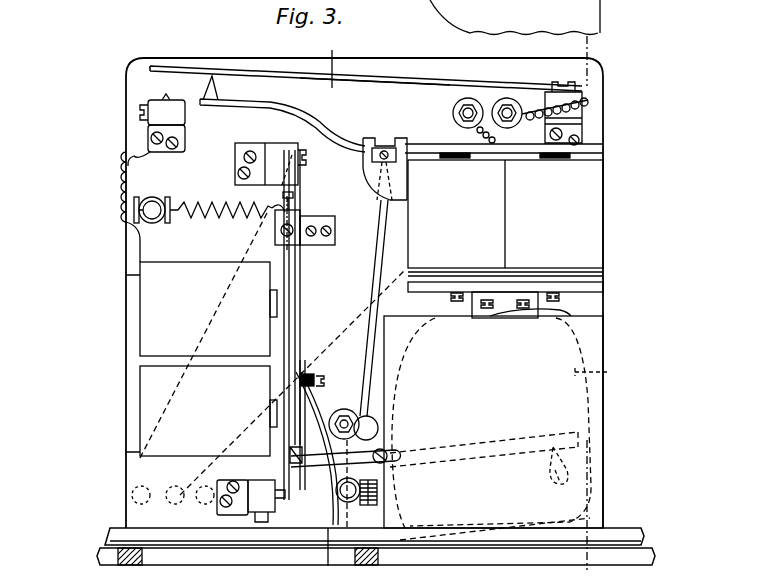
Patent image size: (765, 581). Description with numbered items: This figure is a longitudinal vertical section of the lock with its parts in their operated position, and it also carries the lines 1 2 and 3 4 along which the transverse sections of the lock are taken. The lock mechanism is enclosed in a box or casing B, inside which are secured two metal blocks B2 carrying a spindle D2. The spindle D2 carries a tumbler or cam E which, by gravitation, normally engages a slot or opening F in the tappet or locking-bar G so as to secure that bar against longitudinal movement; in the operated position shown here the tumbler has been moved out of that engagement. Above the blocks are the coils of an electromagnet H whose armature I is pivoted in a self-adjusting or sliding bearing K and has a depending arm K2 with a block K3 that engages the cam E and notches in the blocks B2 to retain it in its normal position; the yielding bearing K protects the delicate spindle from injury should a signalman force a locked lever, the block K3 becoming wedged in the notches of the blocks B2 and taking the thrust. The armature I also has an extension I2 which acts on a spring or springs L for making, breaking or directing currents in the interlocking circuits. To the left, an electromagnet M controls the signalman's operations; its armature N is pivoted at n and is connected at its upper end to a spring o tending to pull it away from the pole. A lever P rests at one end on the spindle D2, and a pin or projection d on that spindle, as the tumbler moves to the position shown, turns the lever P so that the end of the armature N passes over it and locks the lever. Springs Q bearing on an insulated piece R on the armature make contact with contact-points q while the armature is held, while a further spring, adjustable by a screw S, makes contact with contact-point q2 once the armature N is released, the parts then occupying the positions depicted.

The tumbler or cam E is at (525, 190).
The box or casing B is at (233, 58).
The section line 3 is at (322, 61).
The spring or springs L is at (400, 83).
The section line 1 is at (580, 59).
The extension of armature I2 is at (328, 128).
The self-adjusting or sliding bearing K is at (384, 146).
The armature I is at (440, 147).
The coils of electromagnet H is at (505, 239).
The pivot of armature n is at (304, 216).
The spring o is at (226, 212).
The electromagnet M is at (201, 359).
The armature N is at (291, 322).
The depending arm K2 is at (366, 308).
The screw S is at (318, 378).
The block K3 is at (371, 426).
The insulated piece R is at (305, 428).
The springs Q is at (311, 420).
The lever P is at (368, 457).
The contact-point q2 is at (344, 511).
The contact-points q is at (282, 500).
The metal blocks B2 is at (493, 428).
The pin or projection d is at (548, 468).
The spindle D2 is at (553, 482).
The slot or opening F is at (274, 548).
The tappet or locking-bar G is at (376, 555).
The section line 4 is at (324, 554).
The section line 2 is at (584, 510).